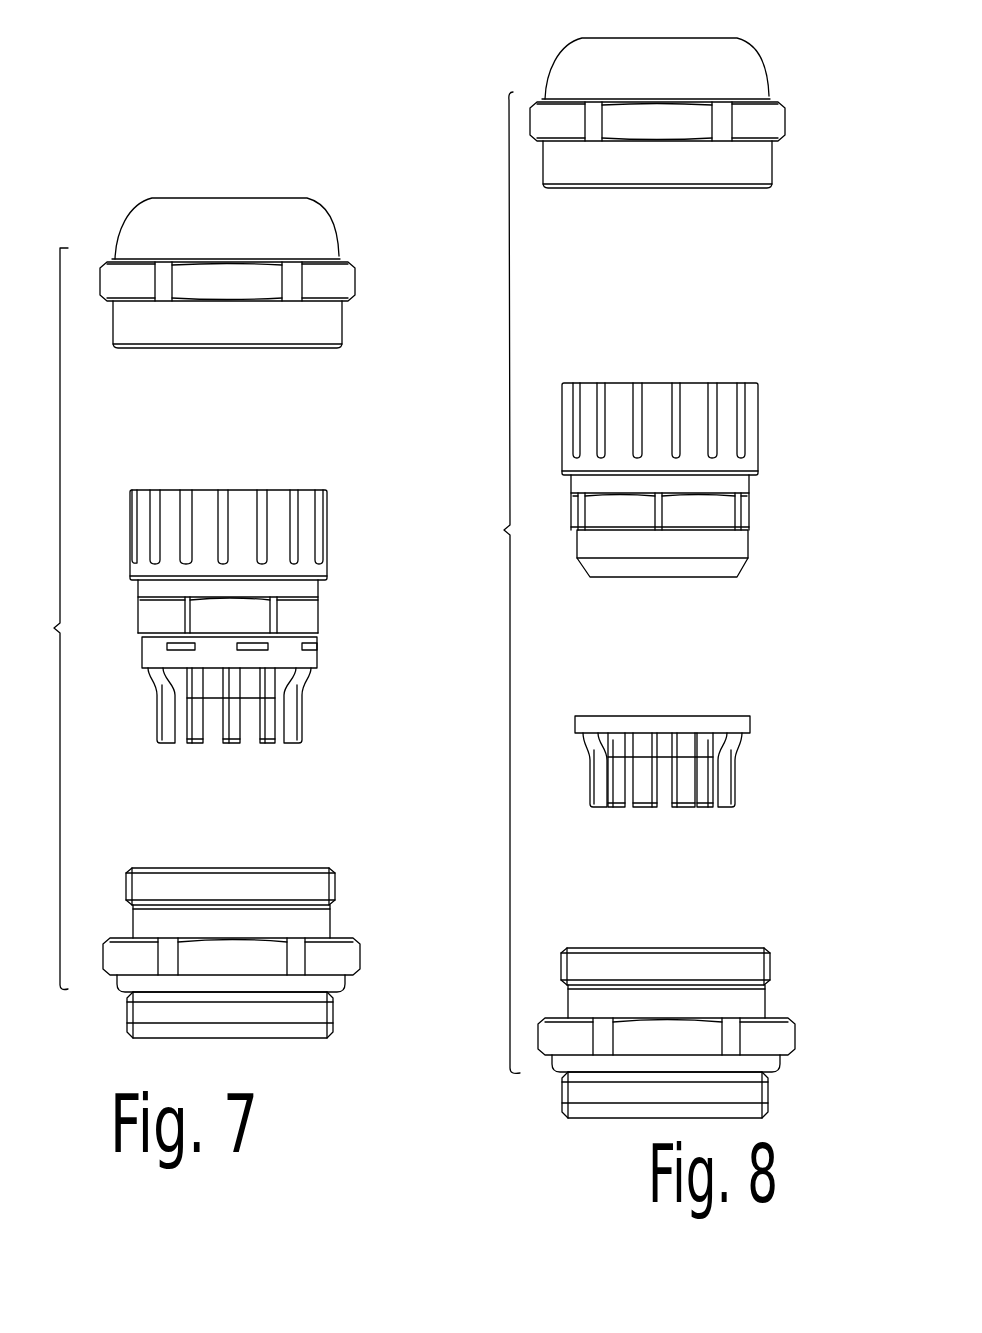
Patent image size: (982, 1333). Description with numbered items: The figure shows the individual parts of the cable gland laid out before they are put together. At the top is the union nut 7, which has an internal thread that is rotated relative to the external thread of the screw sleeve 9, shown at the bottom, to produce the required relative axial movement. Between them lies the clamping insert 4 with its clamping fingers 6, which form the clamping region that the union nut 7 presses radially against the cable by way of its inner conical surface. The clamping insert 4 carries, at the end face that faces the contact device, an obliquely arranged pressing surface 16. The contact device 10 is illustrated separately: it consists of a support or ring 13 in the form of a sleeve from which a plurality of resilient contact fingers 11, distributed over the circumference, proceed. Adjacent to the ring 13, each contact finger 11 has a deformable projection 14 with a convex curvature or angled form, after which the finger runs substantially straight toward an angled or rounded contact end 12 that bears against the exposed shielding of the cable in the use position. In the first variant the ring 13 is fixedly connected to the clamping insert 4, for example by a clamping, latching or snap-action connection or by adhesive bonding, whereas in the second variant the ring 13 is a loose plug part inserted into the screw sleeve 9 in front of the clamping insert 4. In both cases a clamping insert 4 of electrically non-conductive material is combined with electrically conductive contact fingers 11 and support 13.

In FIG. 7, the clamping insert 4 is at (253, 522).
In FIG. 8, the clamping insert 4 is at (697, 453).
In FIG. 7, the clamping fingers 6 is at (268, 507).
In FIG. 8, the clamping fingers 6 is at (687, 403).
In FIG. 7, the union nut 7 is at (137, 243).
In FIG. 8, the union nut 7 is at (573, 75).
In FIG. 7, the screw sleeve 9 is at (310, 925).
In FIG. 8, the screw sleeve 9 is at (748, 1010).
In FIG. 7, the contact device 10 is at (243, 702).
In FIG. 8, the contact device 10 is at (695, 752).
In FIG. 7, the contact fingers 11 is at (267, 705).
In FIG. 8, the contact fingers 11 is at (680, 770).
In FIG. 7, the contact end 12 is at (267, 743).
In FIG. 8, the contact end 12 is at (638, 808).
In FIG. 7, the support or ring 13 is at (315, 653).
In FIG. 8, the support or ring 13 is at (743, 722).
In FIG. 7, the deformable projection 14 is at (157, 682).
In FIG. 8, the deformable projection 14 is at (597, 752).
In FIG. 8, the pressing surface 16 is at (737, 567).